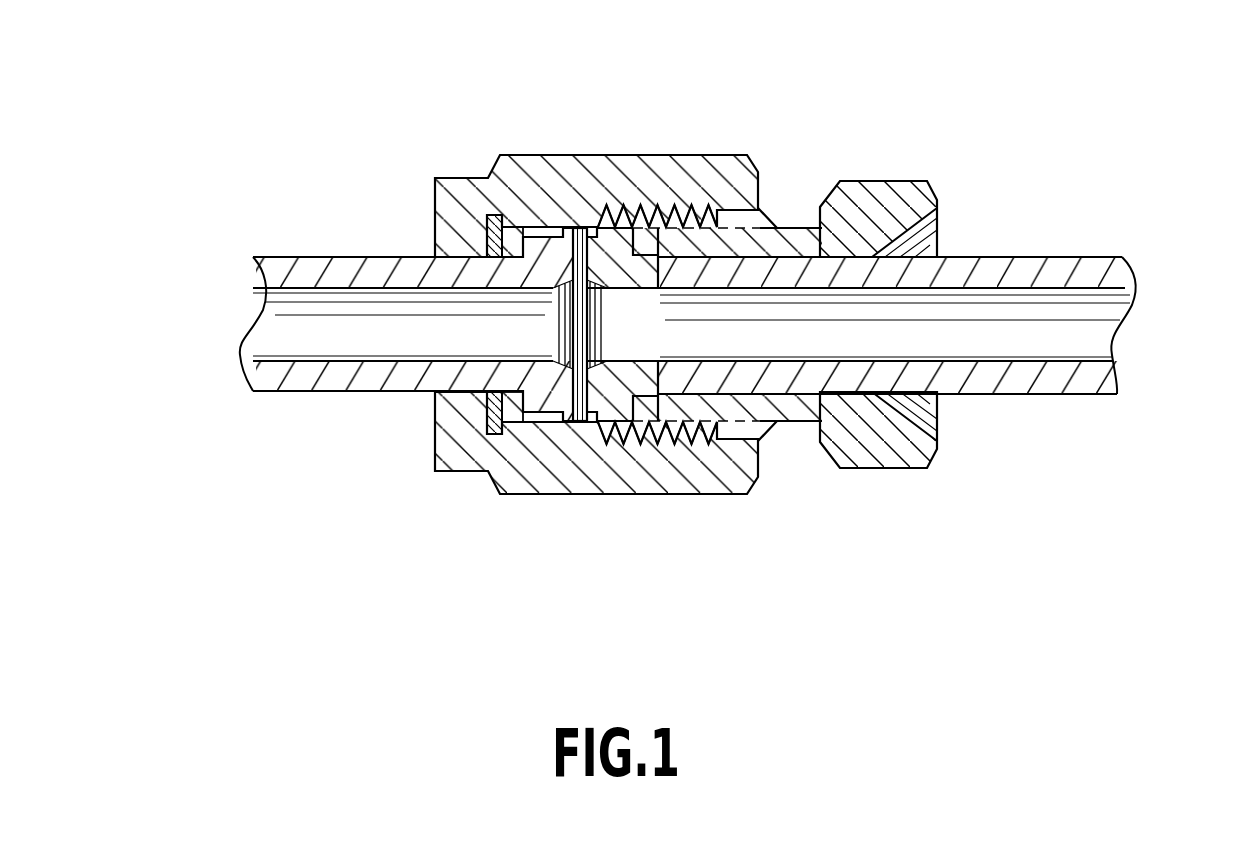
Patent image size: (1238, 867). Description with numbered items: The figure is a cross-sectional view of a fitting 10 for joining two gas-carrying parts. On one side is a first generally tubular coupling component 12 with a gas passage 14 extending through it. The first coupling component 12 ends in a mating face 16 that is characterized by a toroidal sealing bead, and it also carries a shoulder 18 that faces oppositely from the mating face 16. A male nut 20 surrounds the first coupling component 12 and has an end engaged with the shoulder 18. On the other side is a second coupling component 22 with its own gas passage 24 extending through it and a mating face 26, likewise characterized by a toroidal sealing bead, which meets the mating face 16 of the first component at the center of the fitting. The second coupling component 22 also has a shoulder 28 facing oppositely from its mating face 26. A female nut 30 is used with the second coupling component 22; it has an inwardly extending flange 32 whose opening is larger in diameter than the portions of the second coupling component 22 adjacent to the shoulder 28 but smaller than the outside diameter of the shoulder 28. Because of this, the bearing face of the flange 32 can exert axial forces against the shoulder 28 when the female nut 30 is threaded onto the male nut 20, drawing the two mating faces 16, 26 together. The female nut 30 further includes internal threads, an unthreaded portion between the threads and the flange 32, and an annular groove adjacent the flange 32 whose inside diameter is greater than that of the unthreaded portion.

The fitting 10 is at (458, 571).
The first coupling component 12 is at (1050, 258).
The gas passage 14 is at (1097, 347).
The mating face 16 is at (583, 228).
The shoulder 18 is at (707, 205).
The male nut 20 is at (872, 180).
The second coupling component 22 is at (282, 258).
The gas passage 24 is at (268, 347).
The mating face 26 is at (570, 423).
The shoulder 28 is at (480, 427).
The female nut 30 is at (473, 90).
The flange 32 is at (435, 228).